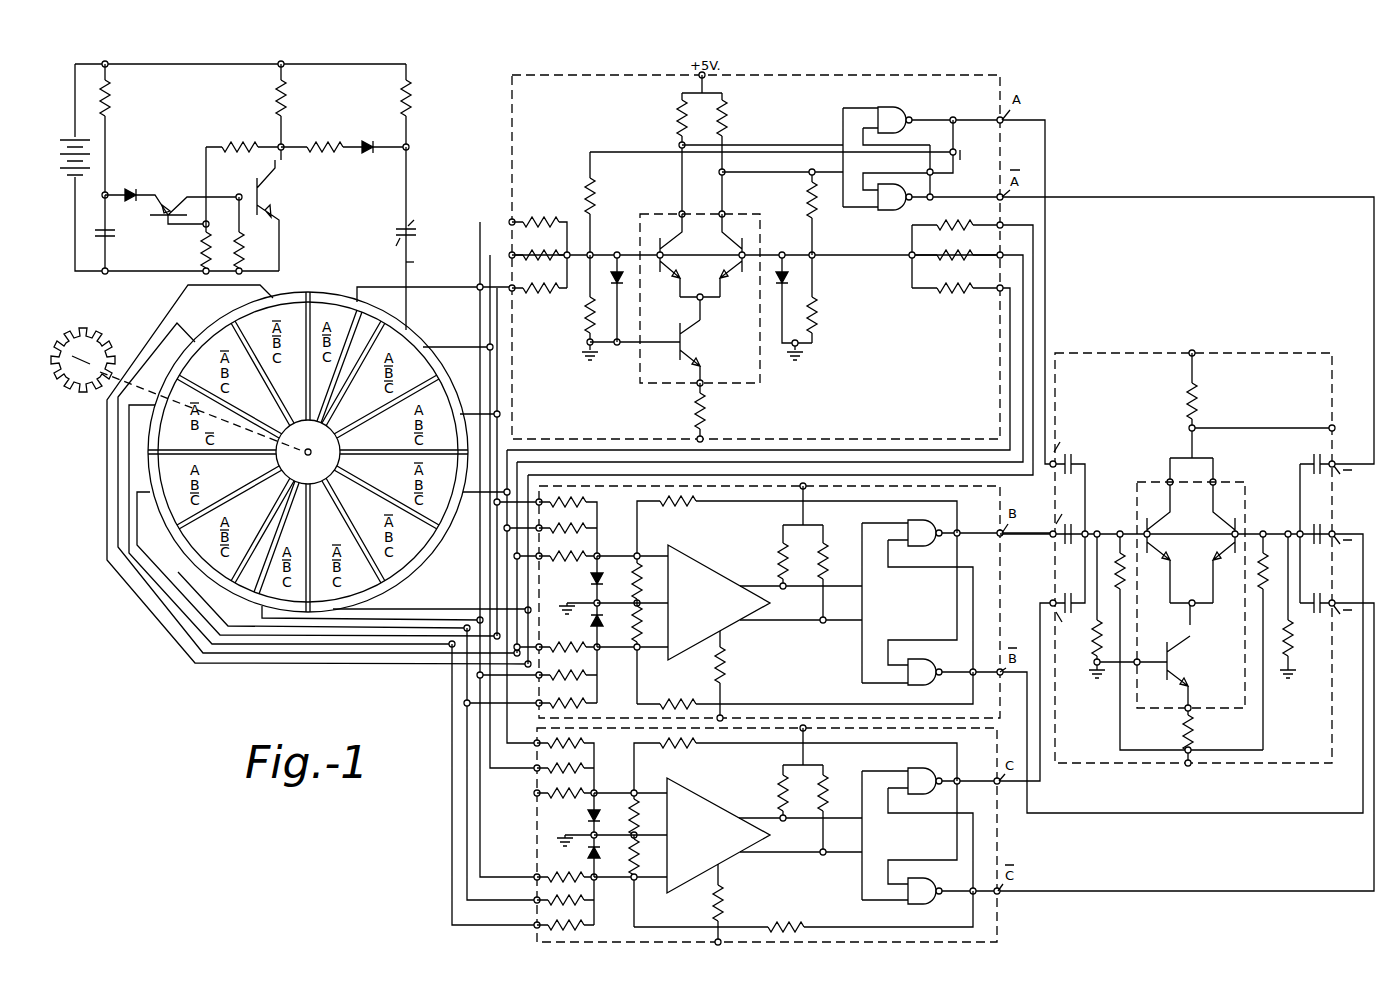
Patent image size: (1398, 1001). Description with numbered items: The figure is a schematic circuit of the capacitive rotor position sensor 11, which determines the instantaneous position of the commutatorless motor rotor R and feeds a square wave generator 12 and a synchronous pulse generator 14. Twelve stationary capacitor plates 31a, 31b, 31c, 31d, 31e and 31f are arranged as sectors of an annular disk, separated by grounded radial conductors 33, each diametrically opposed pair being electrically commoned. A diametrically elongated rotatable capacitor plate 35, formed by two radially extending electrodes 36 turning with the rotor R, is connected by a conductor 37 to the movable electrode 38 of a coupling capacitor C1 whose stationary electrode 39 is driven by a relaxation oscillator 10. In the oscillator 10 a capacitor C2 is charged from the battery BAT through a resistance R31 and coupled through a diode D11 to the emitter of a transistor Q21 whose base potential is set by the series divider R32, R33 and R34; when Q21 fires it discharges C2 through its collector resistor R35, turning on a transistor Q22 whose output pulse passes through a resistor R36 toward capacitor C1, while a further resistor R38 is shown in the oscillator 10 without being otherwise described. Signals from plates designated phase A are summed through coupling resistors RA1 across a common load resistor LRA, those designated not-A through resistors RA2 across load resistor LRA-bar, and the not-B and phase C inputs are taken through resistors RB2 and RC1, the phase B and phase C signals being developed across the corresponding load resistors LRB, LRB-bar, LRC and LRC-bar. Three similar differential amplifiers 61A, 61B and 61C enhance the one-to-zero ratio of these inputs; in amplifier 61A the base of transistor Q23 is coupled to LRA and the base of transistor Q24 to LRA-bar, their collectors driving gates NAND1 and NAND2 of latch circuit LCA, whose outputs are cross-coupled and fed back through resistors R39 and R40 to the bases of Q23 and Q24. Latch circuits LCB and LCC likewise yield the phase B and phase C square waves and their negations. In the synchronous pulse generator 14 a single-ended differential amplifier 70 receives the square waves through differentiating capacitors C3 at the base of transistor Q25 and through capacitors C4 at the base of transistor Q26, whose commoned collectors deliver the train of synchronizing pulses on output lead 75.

The relaxation oscillator 10 is at (185, 115).
The capacitive rotor position sensor 11 is at (150, 604).
The square wave generator 12 is at (812, 417).
The synchronous pulse generator 14 is at (1122, 764).
The stationary capacitor plate 31a is at (320, 300).
The stationary capacitor plate 31b is at (308, 454).
The stationary capacitor plate 31c is at (308, 452).
The stationary capacitor plate 31d is at (310, 452).
The stationary capacitor plate 31e is at (301, 450).
The stationary capacitor plate 31f is at (290, 375).
The radial conductors 33 is at (430, 356).
The rotatable capacitor plate 35 is at (336, 462).
The radially extending electrodes 36 is at (365, 318).
The conductor 37 is at (420, 261).
The movable electrode 38 is at (387, 246).
The stationary electrode 39 is at (420, 214).
The differential amplifier 61A is at (700, 329).
The differential amplifier 61B is at (805, 602).
The differential amplifier 61C is at (803, 835).
The single-ended differential amplifier 70 is at (1225, 681).
The output lead 75 is at (1333, 428).
The motor rotor R is at (108, 341).
The battery BAT is at (86, 141).
The resistance R31 is at (110, 96).
The resistor R32 is at (200, 255).
The resistor R33 is at (243, 140).
The resistor R34 is at (287, 96).
The collector resistor R35 is at (246, 248).
The resistor R36 is at (325, 160).
The resistor R38 is at (412, 96).
The resistor R39 is at (596, 195).
The resistor R40 is at (805, 190).
The coupling resistors RA1 is at (548, 298).
The input resistors RA2 is at (940, 282).
The input resistors RB2 is at (584, 688).
The resistor RC1 is at (584, 745).
The load resistor LRA is at (580, 322).
The load resistor LRA-bar is at (852, 325).
The load resistor LRB is at (645, 560).
The load resistor (complement) LRB-bar is at (672, 676).
The load resistor LRC is at (645, 796).
The load resistor (complement) LRC-bar is at (630, 881).
The transistor Q21 is at (175, 200).
The transistor Q22 is at (272, 194).
The transistor Q23 is at (668, 252).
The transistor Q24 is at (746, 240).
The transistor Q25 is at (1160, 533).
The transistor Q26 is at (1240, 516).
The diode D11 is at (126, 184).
The coupling capacitor C1 is at (417, 231).
The capacitor C2 is at (114, 233).
The differentiating capacitors C3 is at (1076, 458).
The differentiating capacitors C4 is at (1310, 458).
The NAND gate NAND1 is at (893, 95).
The NAND gate NAND2 is at (884, 210).
The NAND gate latch circuit LCA is at (972, 155).
The NAND gate latch circuit LCB is at (771, 602).
The NAND gate latch circuit LCC is at (768, 835).